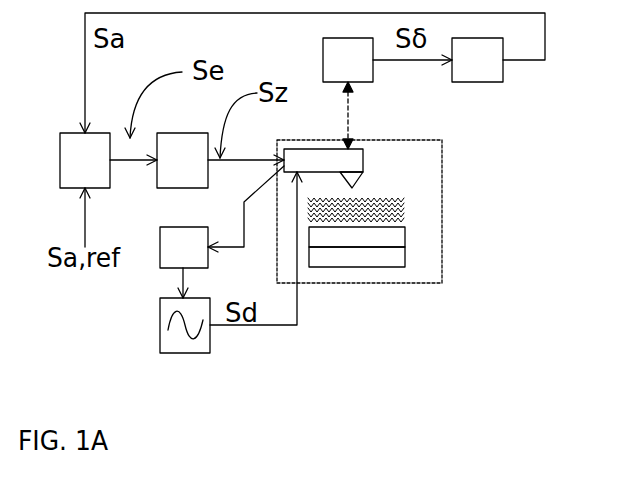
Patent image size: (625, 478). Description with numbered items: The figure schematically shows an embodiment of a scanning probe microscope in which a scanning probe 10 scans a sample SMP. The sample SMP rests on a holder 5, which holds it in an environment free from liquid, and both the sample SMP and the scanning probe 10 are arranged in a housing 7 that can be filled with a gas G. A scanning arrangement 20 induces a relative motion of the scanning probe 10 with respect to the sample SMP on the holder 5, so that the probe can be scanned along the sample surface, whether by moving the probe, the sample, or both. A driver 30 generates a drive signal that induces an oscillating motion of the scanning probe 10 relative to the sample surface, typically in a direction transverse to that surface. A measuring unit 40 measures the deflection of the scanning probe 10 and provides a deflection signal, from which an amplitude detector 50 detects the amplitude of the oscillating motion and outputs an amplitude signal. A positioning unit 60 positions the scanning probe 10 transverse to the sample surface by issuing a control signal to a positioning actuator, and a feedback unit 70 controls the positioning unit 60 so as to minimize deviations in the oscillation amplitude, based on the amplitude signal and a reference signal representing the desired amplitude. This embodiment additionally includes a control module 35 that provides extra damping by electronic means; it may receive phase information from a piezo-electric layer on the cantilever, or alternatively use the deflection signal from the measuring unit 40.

The feedback unit 70 is at (85, 160).
The positioning unit 60 is at (182, 160).
The control module 35 is at (184, 247).
The driver 30 is at (190, 353).
The measuring unit 40 is at (348, 60).
The amplitude detector 50 is at (477, 60).
The scanning probe 10 is at (365, 165).
The housing 7 is at (389, 296).
The holder 5 is at (415, 238).
The scanning arrangement 20 is at (415, 263).
The sample SMP is at (412, 208).
The gas G is at (373, 143).